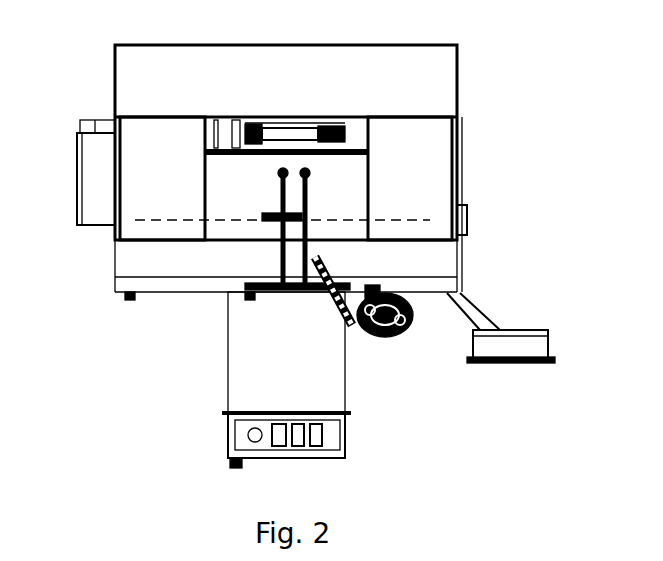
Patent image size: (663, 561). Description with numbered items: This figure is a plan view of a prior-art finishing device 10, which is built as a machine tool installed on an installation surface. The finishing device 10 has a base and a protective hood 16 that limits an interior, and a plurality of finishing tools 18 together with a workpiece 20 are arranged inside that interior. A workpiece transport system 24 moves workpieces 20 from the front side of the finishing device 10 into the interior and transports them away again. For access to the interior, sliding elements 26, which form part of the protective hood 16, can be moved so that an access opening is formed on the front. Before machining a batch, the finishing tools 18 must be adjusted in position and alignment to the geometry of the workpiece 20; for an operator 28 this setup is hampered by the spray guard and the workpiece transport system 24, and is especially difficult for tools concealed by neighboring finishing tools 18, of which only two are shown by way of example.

The finishing device 10 is at (504, 56).
The protective hood 16 is at (131, 82).
The finishing tools 18 is at (328, 196).
The workpiece 20 is at (268, 216).
The workpiece transport system 24 is at (243, 358).
The sliding elements 26 is at (175, 283).
The operator 28 is at (394, 342).